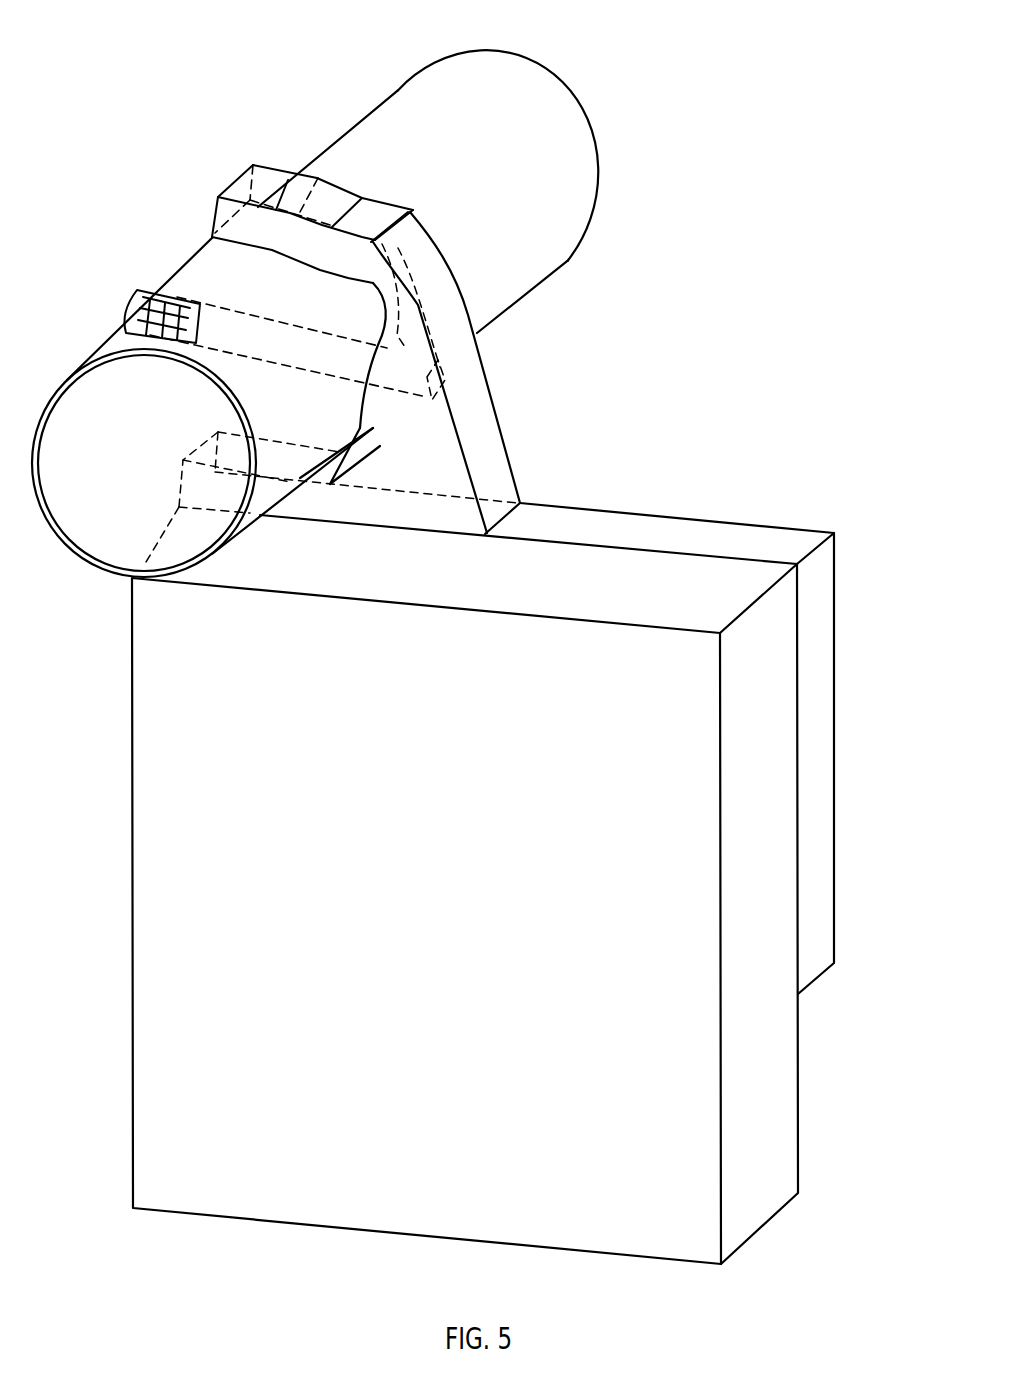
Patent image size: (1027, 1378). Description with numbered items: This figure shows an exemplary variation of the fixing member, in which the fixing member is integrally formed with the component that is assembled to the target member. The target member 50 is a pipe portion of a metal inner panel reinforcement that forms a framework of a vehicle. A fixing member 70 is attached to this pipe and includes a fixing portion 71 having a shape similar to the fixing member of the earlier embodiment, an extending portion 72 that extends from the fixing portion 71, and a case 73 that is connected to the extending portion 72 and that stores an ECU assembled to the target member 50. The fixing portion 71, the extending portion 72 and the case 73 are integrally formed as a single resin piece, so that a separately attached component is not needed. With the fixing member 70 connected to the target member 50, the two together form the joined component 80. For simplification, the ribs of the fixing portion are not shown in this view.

The target member 50 is at (550, 105).
The fixing member 70 is at (728, 397).
The fixing portion 71 is at (483, 428).
The extending portion 72 is at (783, 540).
The case 73 is at (760, 882).
The joined component 80 is at (813, 75).